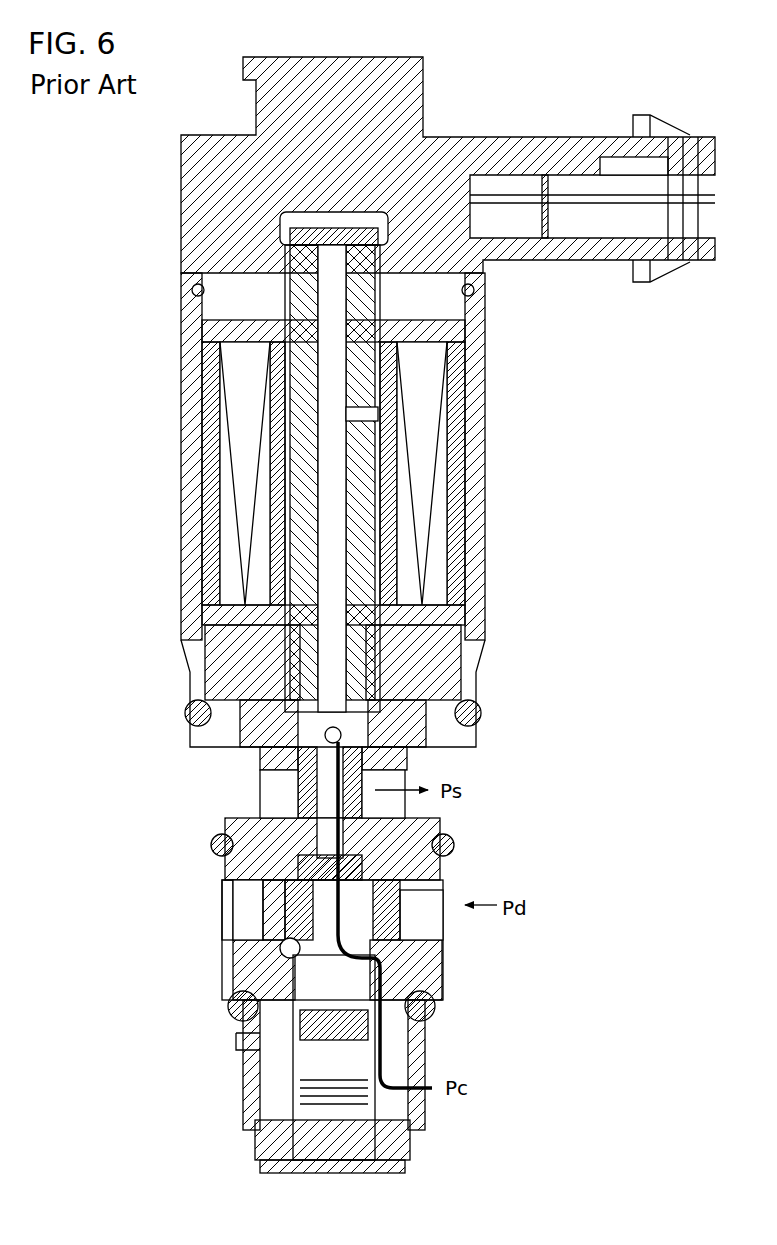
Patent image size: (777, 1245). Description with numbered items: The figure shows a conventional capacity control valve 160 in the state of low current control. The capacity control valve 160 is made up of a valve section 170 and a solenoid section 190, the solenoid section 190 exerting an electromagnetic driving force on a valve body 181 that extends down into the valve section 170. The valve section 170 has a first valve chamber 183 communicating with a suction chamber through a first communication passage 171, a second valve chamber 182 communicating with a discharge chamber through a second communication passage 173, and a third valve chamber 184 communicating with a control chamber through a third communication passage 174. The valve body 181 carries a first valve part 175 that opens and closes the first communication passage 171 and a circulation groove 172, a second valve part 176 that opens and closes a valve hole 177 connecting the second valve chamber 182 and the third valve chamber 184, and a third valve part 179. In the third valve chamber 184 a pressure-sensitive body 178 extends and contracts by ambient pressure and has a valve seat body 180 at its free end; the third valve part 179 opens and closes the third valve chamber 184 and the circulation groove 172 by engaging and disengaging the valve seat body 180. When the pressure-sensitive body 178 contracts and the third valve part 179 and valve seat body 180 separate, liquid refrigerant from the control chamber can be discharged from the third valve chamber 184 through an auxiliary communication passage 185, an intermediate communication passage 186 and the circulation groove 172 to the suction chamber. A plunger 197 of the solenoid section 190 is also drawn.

The capacity control valve 160 is at (585, 390).
The solenoid section 190 is at (168, 410).
The plunger 197 is at (375, 432).
The valve section 170 is at (485, 848).
The first communication passage 171 is at (410, 775).
The circulation groove 172 is at (326, 790).
The second communication passage 173 is at (405, 945).
The third communication passage 174 is at (415, 1120).
The first valve part 175 is at (262, 758).
The second valve part 176 is at (410, 925).
The valve hole 177 is at (284, 943).
The pressure-sensitive body 178 is at (243, 1052).
The third valve part 179 is at (262, 975).
The valve seat body 180 is at (230, 1012).
The valve body 181 is at (285, 818).
The second valve chamber 182 is at (400, 878).
The first valve chamber 183 is at (392, 812).
The third valve chamber 184 is at (255, 1113).
The auxiliary communication passage 185 is at (430, 990).
The intermediate communication passage 186 is at (285, 910).